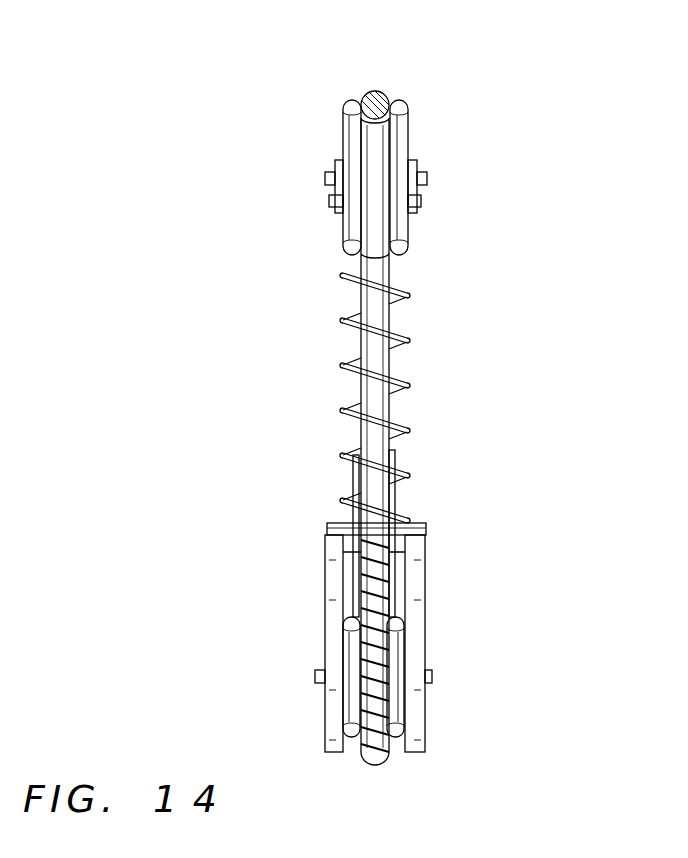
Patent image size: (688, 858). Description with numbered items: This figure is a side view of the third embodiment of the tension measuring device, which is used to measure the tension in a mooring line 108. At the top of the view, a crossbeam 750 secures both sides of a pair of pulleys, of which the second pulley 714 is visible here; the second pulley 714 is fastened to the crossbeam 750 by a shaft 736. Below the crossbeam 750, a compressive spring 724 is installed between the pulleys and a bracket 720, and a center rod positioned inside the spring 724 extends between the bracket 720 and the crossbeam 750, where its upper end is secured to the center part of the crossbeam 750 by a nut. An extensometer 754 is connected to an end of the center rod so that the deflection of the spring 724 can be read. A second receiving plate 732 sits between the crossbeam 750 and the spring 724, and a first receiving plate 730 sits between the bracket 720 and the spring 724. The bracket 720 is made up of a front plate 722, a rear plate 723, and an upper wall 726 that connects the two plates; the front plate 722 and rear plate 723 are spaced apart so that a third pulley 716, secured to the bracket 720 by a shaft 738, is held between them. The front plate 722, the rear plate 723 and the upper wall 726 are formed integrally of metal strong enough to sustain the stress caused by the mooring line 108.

The mooring line 108 is at (373, 91).
The second pulley 714 is at (409, 108).
The crossbeam 750 is at (418, 163).
The shaft 736 is at (427, 178).
The second receiving plate 732 is at (422, 203).
The compressive spring 724 is at (407, 293).
The extensometer 754 is at (396, 500).
The upper wall 726 is at (354, 548).
The first receiving plate 730 is at (426, 527).
The bracket 720 is at (371, 632).
The rear plate 723 is at (415, 583).
The shaft 738 is at (432, 672).
The front plate 722 is at (332, 703).
The third pulley 716 is at (398, 712).